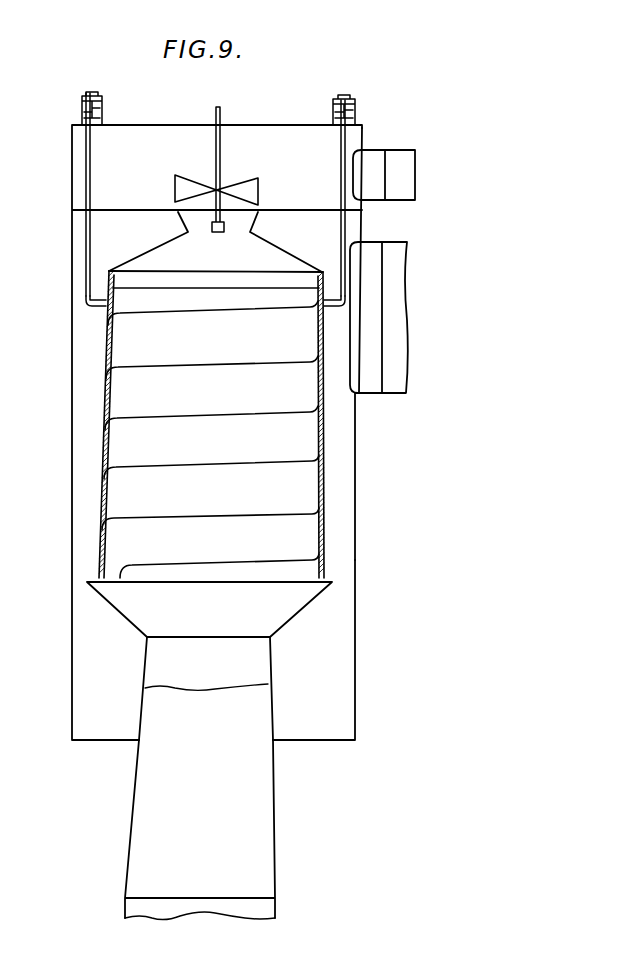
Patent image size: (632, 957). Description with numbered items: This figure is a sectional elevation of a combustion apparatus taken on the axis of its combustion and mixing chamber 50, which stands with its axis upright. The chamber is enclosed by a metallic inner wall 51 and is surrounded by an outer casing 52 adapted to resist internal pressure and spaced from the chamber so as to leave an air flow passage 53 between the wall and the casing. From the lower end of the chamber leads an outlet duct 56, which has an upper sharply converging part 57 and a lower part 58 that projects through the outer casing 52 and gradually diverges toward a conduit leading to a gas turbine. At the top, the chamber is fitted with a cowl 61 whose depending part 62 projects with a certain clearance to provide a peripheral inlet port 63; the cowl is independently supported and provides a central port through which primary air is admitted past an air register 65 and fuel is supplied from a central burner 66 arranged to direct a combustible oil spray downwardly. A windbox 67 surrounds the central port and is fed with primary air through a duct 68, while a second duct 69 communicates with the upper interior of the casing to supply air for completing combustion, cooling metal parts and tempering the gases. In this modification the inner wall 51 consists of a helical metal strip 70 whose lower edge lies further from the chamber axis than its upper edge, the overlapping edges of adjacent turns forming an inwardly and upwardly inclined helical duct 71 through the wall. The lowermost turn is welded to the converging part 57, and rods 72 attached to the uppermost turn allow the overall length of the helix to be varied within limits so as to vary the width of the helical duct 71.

The combustion and mixing chamber 50 is at (160, 443).
The inner wall 51 is at (325, 458).
The outer casing 52 is at (355, 542).
The air flow passage 53 is at (342, 493).
The outlet duct 56 is at (250, 660).
The converging part 57 is at (305, 612).
The lower part 58 is at (235, 718).
The cowl 61 is at (143, 252).
The depending part 62 is at (133, 288).
The peripheral inlet port 63 is at (108, 272).
The air register 65 is at (188, 187).
The central burner 66 is at (229, 208).
The windbox 67 is at (305, 135).
The duct 68 is at (368, 153).
The second duct 69 is at (370, 253).
The helical metal strip 70 is at (100, 497).
The helical duct 71 is at (104, 378).
The rods 72 is at (100, 105).